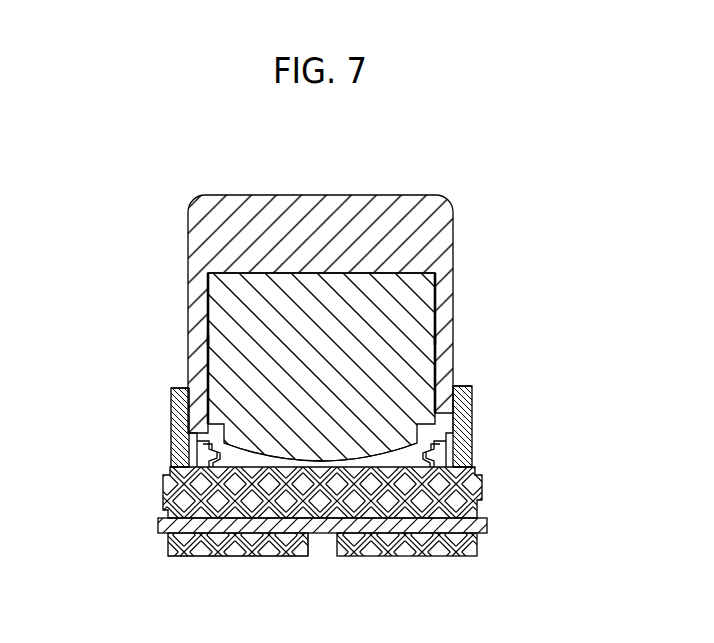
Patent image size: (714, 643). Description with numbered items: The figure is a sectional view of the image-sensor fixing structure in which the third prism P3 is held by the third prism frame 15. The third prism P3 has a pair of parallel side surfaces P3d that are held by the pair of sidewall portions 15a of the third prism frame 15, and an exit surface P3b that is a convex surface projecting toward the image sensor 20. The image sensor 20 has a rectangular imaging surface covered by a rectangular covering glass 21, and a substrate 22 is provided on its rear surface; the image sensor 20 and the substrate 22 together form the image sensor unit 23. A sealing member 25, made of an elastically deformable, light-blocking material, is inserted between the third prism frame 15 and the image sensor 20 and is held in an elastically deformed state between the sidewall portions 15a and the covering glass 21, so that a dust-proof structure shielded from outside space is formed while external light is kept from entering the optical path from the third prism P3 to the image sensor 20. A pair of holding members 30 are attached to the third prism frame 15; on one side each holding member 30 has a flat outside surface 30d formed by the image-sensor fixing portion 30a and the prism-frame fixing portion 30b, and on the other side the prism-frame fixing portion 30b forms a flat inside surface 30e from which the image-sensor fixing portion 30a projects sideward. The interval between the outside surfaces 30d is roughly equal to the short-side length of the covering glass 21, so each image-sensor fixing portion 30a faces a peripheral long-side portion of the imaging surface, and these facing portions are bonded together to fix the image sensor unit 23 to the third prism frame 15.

The third prism frame 15 is at (460, 211).
The sidewall portions 15a is at (197, 315).
The third prism P3 is at (293, 318).
The side surfaces P3d is at (206, 340).
The exit surface P3b is at (372, 458).
The holding members 30 is at (322, 413).
The image-sensor fixing portion 30a is at (177, 452).
The prism-frame fixing portion 30b is at (178, 399).
The outside surface 30d is at (180, 419).
The inside surface 30e is at (190, 386).
The covering glass 21 is at (477, 471).
The image sensor 20 is at (477, 493).
The substrate 22 is at (485, 524).
The image sensor unit 23 is at (312, 526).
The sealing member 25 is at (232, 448).